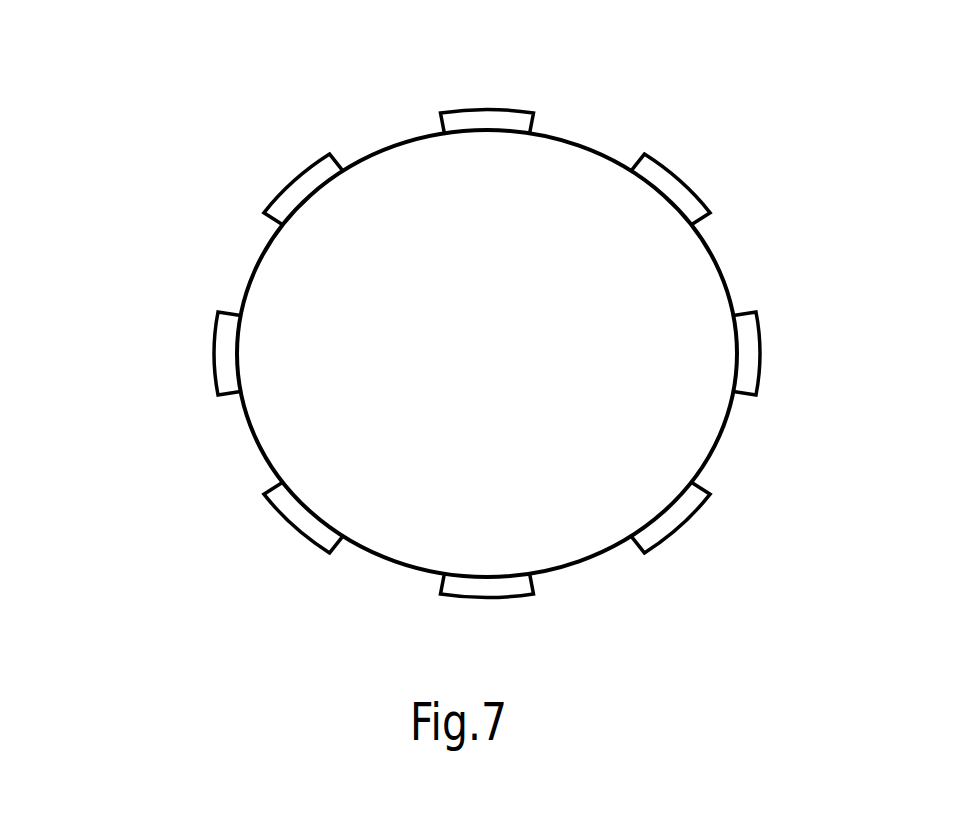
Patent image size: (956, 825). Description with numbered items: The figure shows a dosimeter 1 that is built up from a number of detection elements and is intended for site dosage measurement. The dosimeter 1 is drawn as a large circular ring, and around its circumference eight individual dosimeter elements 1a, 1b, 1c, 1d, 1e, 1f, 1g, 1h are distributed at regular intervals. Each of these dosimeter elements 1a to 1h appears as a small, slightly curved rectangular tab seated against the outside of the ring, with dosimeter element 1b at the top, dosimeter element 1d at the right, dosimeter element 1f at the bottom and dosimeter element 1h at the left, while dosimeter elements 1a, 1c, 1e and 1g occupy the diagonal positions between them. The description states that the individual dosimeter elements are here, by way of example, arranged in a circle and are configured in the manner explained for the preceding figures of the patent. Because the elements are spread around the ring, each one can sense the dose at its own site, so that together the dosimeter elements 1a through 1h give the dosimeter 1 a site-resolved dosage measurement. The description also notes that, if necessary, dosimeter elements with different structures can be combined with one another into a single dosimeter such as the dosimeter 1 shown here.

The dosimeter 1 is at (196, 547).
The dosimeter element 1a is at (298, 172).
The dosimeter element 1b is at (494, 107).
The dosimeter element 1c is at (687, 181).
The dosimeter element 1d is at (757, 357).
The dosimeter element 1e is at (677, 530).
The dosimeter element 1f is at (495, 597).
The dosimeter element 1g is at (307, 530).
The dosimeter element 1h is at (218, 377).